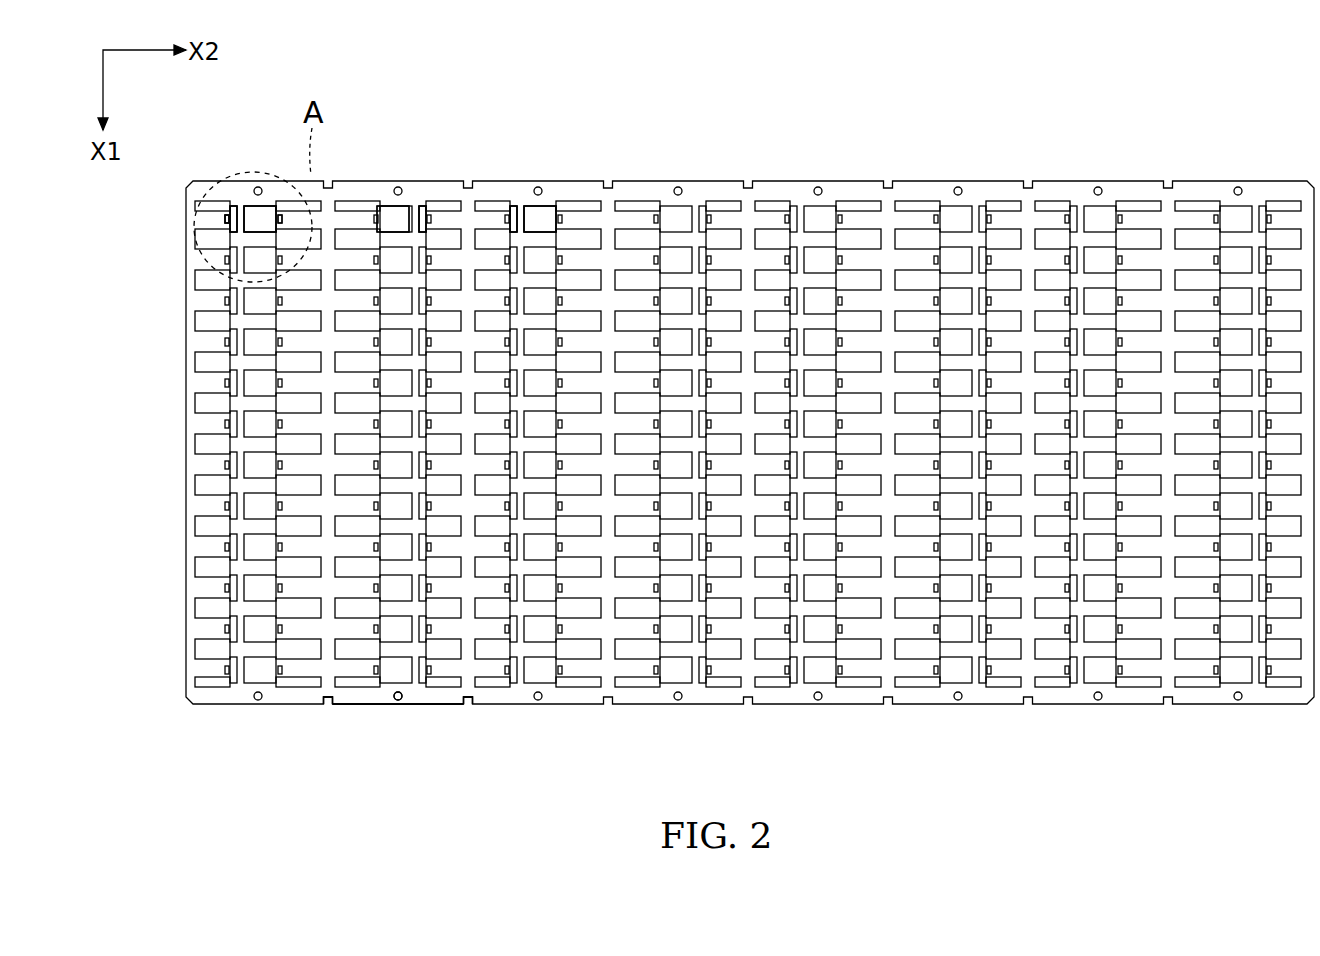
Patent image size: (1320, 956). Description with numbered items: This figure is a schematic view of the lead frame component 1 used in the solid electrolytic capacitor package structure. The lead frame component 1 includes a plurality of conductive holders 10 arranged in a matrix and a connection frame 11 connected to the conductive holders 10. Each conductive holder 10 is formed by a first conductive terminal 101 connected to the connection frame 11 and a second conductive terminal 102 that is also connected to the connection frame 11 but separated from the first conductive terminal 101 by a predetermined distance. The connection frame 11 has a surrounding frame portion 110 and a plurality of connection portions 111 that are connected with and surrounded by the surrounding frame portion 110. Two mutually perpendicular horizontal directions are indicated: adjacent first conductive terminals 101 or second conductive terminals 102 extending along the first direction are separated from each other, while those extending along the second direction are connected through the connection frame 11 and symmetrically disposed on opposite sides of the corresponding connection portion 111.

The lead frame component 1 is at (176, 184).
The conductive holder 10 is at (290, 127).
The first conductive terminal 101 is at (215, 220).
The second conductive terminal 102 is at (265, 220).
The connection frame 11 is at (470, 768).
The surrounding frame portion 110 is at (412, 695).
The connection portion 111 is at (328, 643).